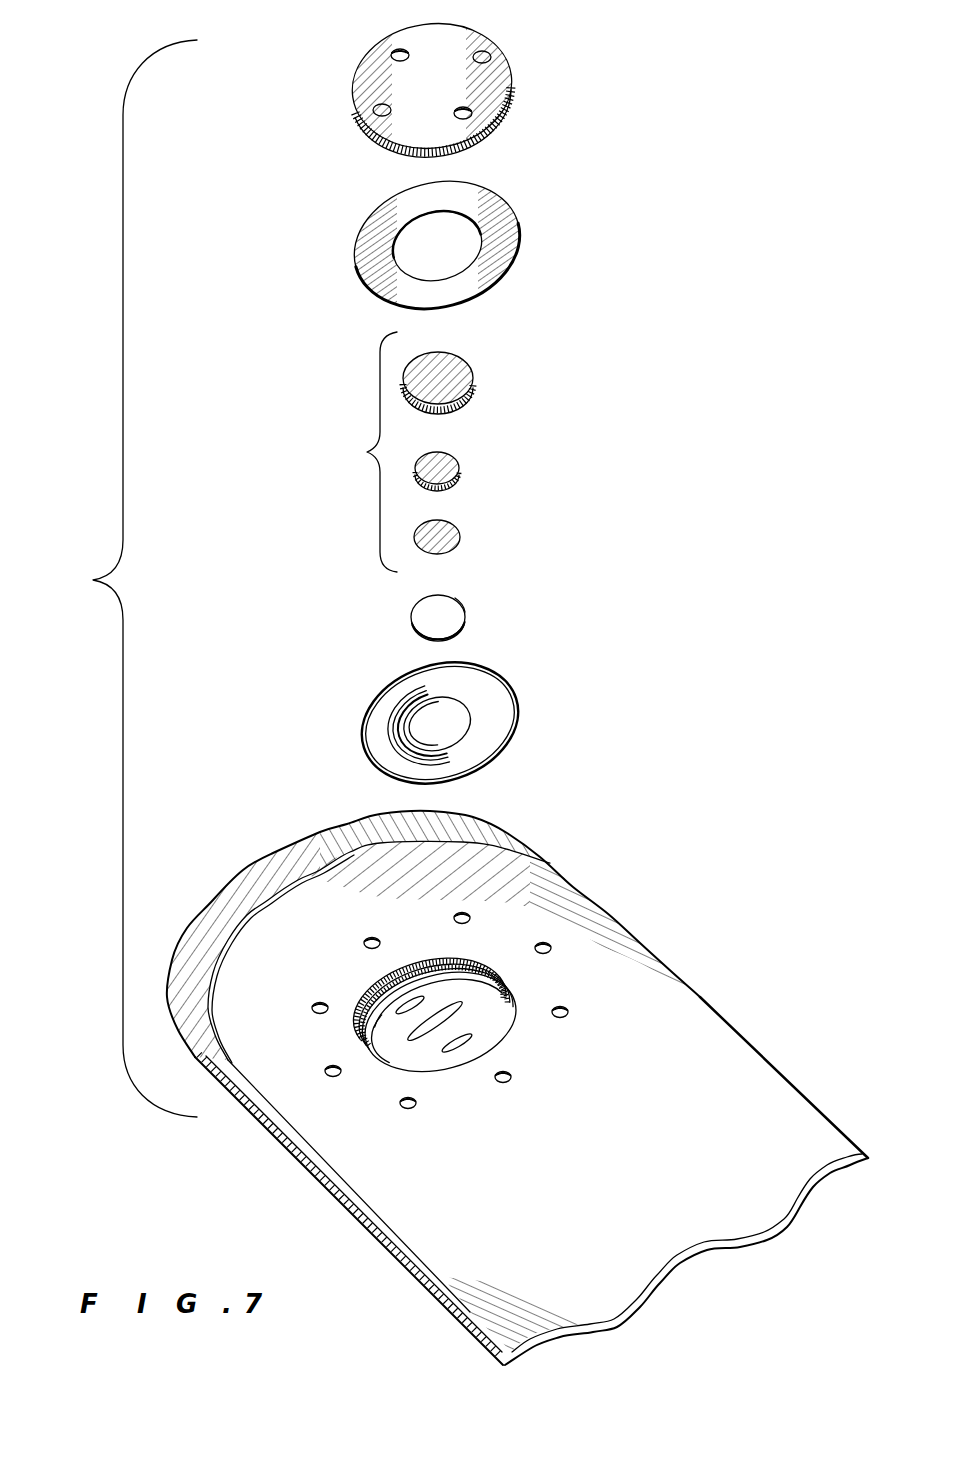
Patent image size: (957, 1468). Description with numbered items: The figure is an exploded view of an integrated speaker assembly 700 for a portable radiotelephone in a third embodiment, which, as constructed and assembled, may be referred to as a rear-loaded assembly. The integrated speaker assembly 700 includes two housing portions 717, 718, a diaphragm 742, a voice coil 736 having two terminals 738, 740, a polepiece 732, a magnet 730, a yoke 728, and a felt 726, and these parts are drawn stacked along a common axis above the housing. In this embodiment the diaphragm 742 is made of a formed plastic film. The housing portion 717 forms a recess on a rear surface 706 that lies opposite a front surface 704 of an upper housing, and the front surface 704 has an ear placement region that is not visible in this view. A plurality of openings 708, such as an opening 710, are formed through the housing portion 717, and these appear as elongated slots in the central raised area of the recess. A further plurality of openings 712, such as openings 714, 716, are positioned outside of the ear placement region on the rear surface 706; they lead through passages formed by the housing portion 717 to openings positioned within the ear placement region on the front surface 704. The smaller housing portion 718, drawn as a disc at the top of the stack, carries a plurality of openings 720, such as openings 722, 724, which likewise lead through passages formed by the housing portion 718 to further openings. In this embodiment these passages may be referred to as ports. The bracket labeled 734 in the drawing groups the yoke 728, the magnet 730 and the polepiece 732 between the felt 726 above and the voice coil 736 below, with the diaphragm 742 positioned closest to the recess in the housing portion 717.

The integrated speaker assembly 700 is at (84, 595).
The front surface 704 is at (287, 1150).
The rear surface 706 is at (385, 1205).
The plurality of openings 708 is at (421, 1045).
The opening 710 is at (422, 996).
The plurality of openings 712 is at (495, 1098).
The opening 714 is at (366, 938).
The opening 716 is at (511, 1076).
The housing portion 717 is at (727, 1020).
The housing portion 718 is at (513, 60).
The plurality of openings 720 is at (423, 128).
The opening 722 is at (400, 50).
The opening 724 is at (467, 118).
The felt 726 is at (380, 220).
The yoke 728 is at (474, 378).
The magnet 730 is at (462, 463).
The polepiece 732 is at (460, 535).
The disc set 734 is at (353, 452).
The voice coil 736 is at (415, 613).
The terminal 738 is at (467, 608).
The terminal 740 is at (467, 620).
The diaphragm 742 is at (378, 698).